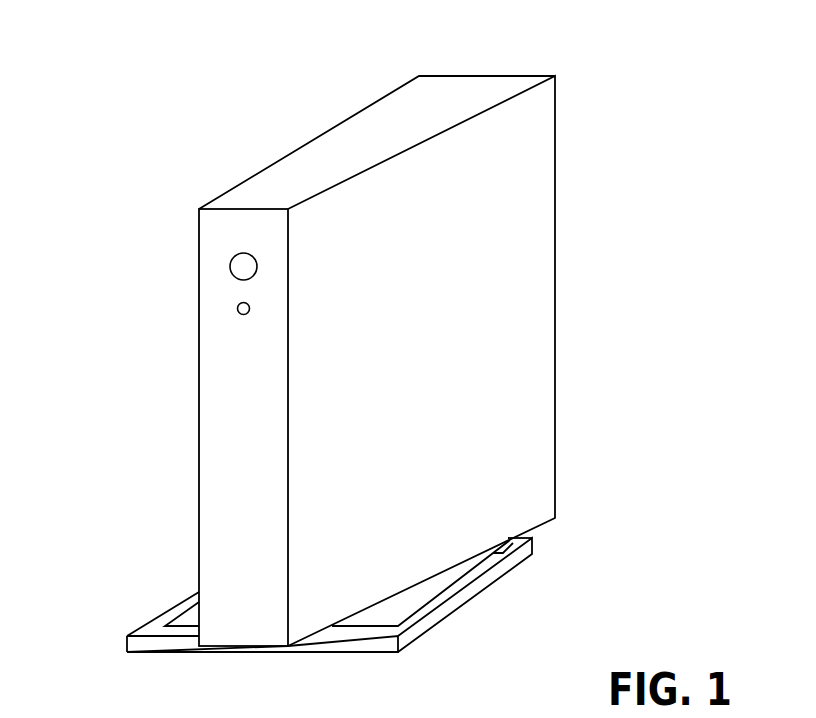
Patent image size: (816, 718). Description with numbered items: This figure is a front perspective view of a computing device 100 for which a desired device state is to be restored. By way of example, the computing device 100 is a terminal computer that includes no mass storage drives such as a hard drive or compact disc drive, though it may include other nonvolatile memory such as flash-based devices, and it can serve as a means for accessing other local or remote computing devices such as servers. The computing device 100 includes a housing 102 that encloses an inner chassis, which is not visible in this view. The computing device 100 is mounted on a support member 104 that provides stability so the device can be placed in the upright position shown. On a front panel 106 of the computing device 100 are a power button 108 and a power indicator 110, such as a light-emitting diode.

The computing device 100 is at (142, 101).
The housing 102 is at (540, 217).
The support member 104 is at (500, 572).
The front panel 106 is at (220, 226).
The power button 108 is at (243, 279).
The power indicator 110 is at (243, 316).